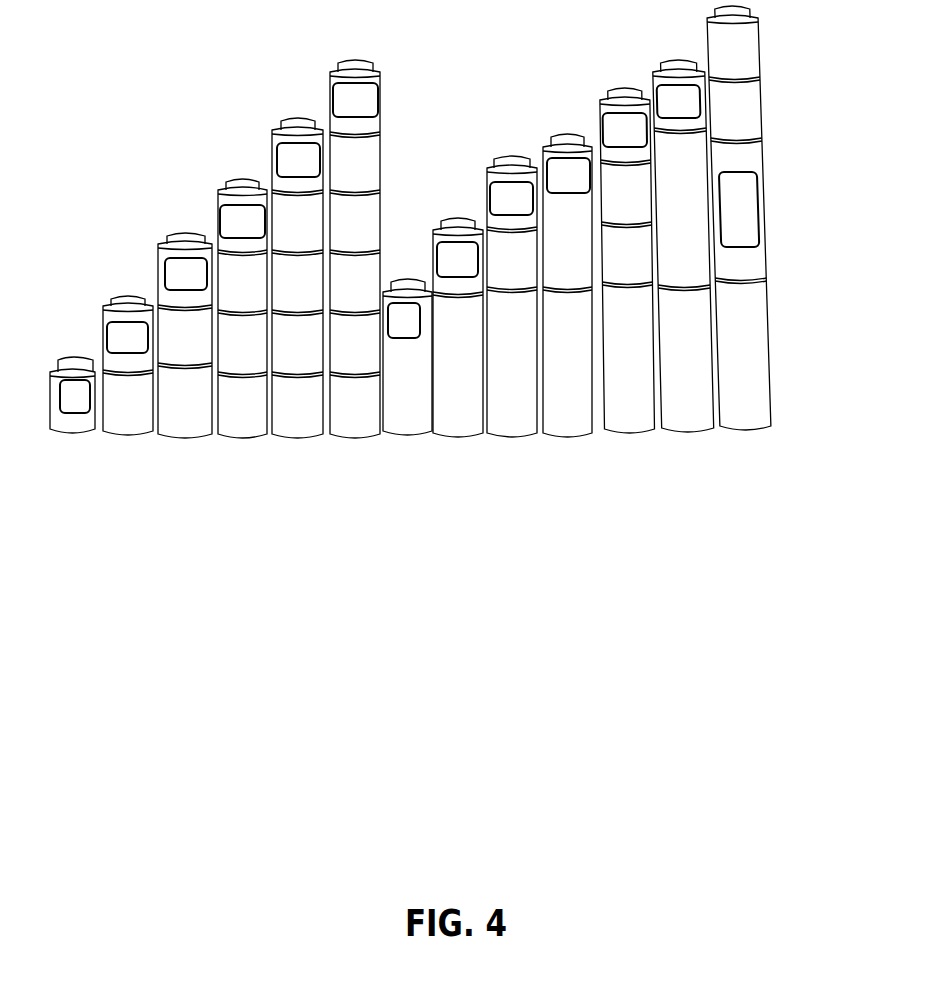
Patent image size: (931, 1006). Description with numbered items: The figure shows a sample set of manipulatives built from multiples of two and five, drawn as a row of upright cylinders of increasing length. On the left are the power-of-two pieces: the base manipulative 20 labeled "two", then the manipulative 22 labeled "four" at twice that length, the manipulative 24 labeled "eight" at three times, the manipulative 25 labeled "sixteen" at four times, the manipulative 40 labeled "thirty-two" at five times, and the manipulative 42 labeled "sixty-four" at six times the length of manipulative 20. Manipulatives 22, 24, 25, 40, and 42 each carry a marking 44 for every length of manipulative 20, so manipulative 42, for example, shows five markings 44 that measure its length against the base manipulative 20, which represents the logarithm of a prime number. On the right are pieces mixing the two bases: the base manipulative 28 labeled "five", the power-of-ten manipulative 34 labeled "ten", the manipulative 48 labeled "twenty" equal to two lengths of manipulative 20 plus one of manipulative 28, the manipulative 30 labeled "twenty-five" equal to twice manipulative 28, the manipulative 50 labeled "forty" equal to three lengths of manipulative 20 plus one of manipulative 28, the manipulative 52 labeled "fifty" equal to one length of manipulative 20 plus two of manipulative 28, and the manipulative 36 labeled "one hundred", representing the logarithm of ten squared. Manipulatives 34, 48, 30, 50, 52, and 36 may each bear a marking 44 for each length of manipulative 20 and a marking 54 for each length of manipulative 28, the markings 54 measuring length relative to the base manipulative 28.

The manipulative 20 is at (72, 437).
The manipulative 22 is at (120, 440).
The manipulative 24 is at (180, 440).
The manipulative 25 is at (235, 440).
The manipulative 40 is at (292, 440).
The manipulative 42 is at (383, 284).
The marking 44 is at (380, 133).
The manipulative 28 is at (405, 437).
The manipulative 34 is at (455, 440).
The manipulative 48 is at (510, 440).
The manipulative 30 is at (572, 440).
The manipulative 50 is at (627, 435).
The manipulative 52 is at (688, 434).
The manipulative 36 is at (768, 254).
The marking 54 is at (759, 281).